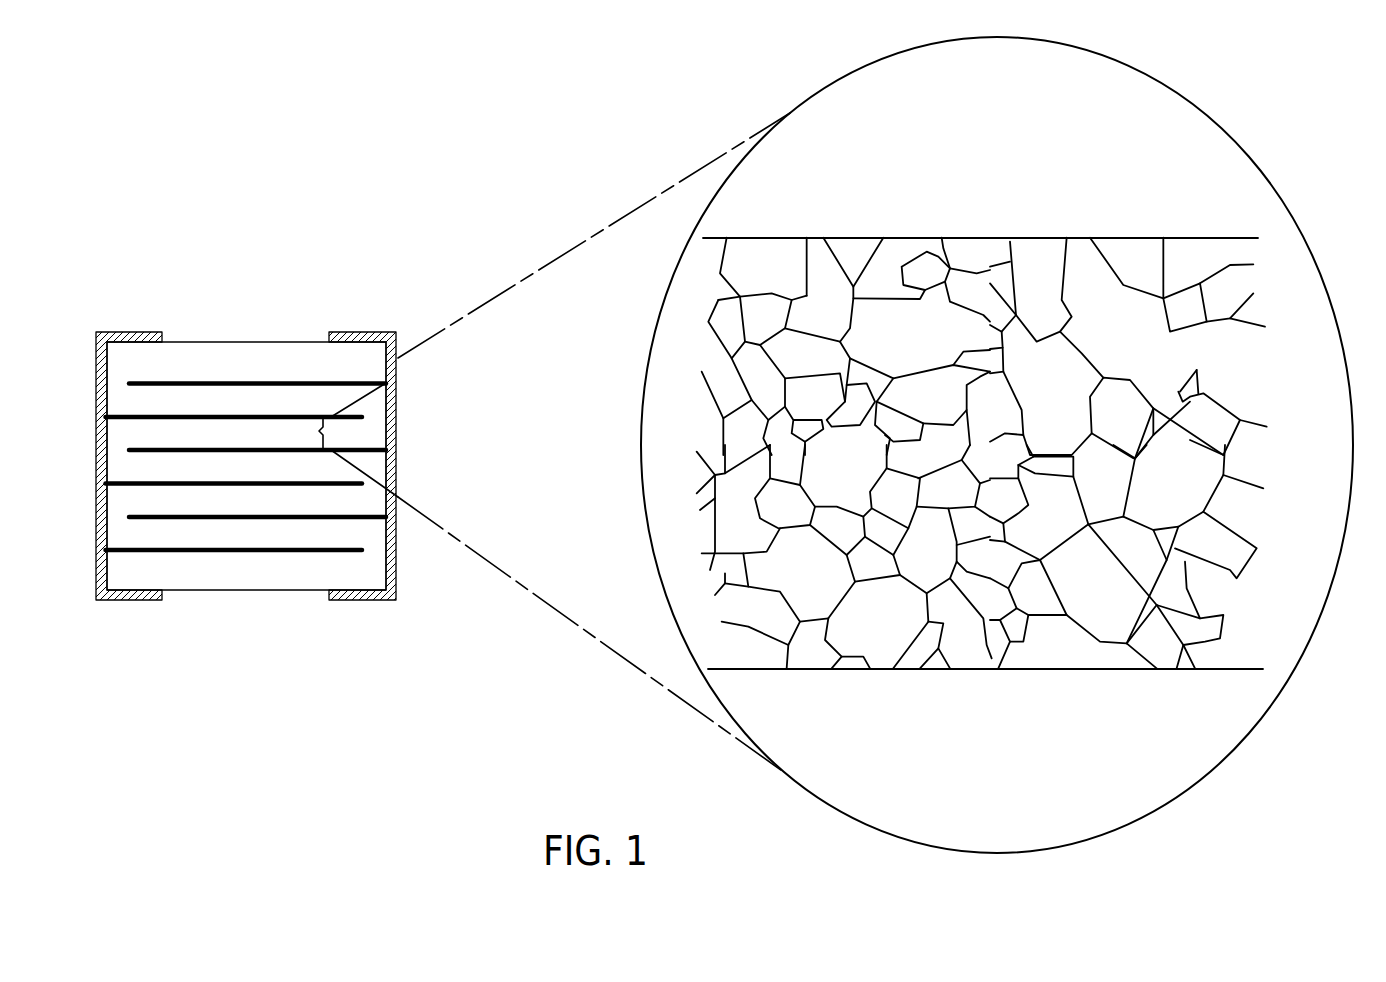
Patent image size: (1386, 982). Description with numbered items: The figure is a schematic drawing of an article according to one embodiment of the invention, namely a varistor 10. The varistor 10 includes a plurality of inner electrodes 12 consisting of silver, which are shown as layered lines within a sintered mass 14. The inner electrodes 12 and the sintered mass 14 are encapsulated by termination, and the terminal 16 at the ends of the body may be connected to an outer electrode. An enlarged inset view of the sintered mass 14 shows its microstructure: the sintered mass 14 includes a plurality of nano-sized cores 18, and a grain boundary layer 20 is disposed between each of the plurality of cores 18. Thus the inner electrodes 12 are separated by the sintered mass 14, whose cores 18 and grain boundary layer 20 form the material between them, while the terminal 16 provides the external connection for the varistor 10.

The varistor 10 is at (137, 239).
The inner electrodes 12 is at (228, 382).
The sintered mass 14 is at (366, 540).
The terminal 16 is at (354, 600).
The nano-sized cores 18 is at (1187, 315).
The grain boundary layer 20 is at (1045, 398).